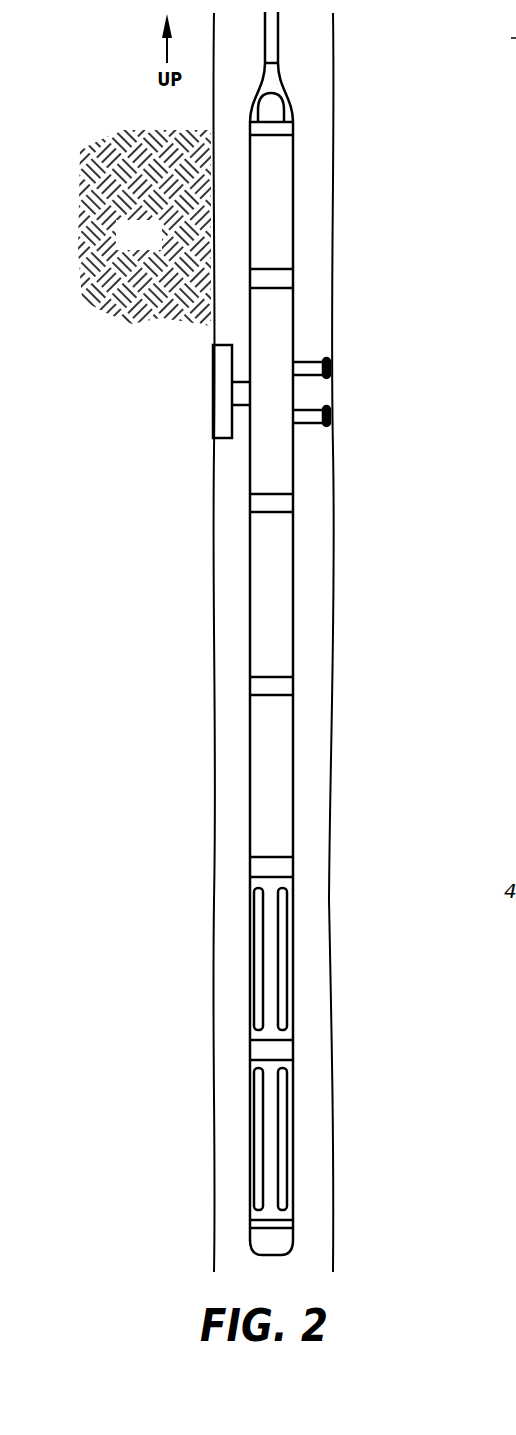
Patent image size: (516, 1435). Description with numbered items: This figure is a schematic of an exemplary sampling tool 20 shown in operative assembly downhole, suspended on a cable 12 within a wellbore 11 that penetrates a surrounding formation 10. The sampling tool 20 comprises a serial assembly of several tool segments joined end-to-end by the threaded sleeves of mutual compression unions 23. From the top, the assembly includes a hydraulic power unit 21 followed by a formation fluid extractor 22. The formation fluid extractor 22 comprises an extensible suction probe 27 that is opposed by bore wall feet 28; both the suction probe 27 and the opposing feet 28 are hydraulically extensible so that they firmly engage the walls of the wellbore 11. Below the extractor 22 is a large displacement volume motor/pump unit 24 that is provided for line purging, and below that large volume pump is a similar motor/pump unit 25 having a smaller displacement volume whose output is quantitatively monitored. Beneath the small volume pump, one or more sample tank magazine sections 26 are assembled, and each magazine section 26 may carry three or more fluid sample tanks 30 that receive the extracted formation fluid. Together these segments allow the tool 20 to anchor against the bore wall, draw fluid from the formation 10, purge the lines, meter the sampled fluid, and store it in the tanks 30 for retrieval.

The formation 10 is at (152, 245).
The wellbore 11 is at (213, 520).
The cable 12 is at (272, 50).
The sampling tool 20 is at (296, 320).
The hydraulic power unit 21 is at (275, 193).
The formation fluid extractor 22 is at (273, 468).
The compression unions 23 is at (272, 280).
The large displacement volume motor/pump unit 24 is at (272, 593).
The small displacement volume motor/pump unit 25 is at (265, 768).
The sample tank magazine section 26 is at (268, 960).
The suction probe 27 is at (222, 385).
The bore wall feet 28 is at (331, 365).
The fluid sample tanks 30 is at (275, 1000).